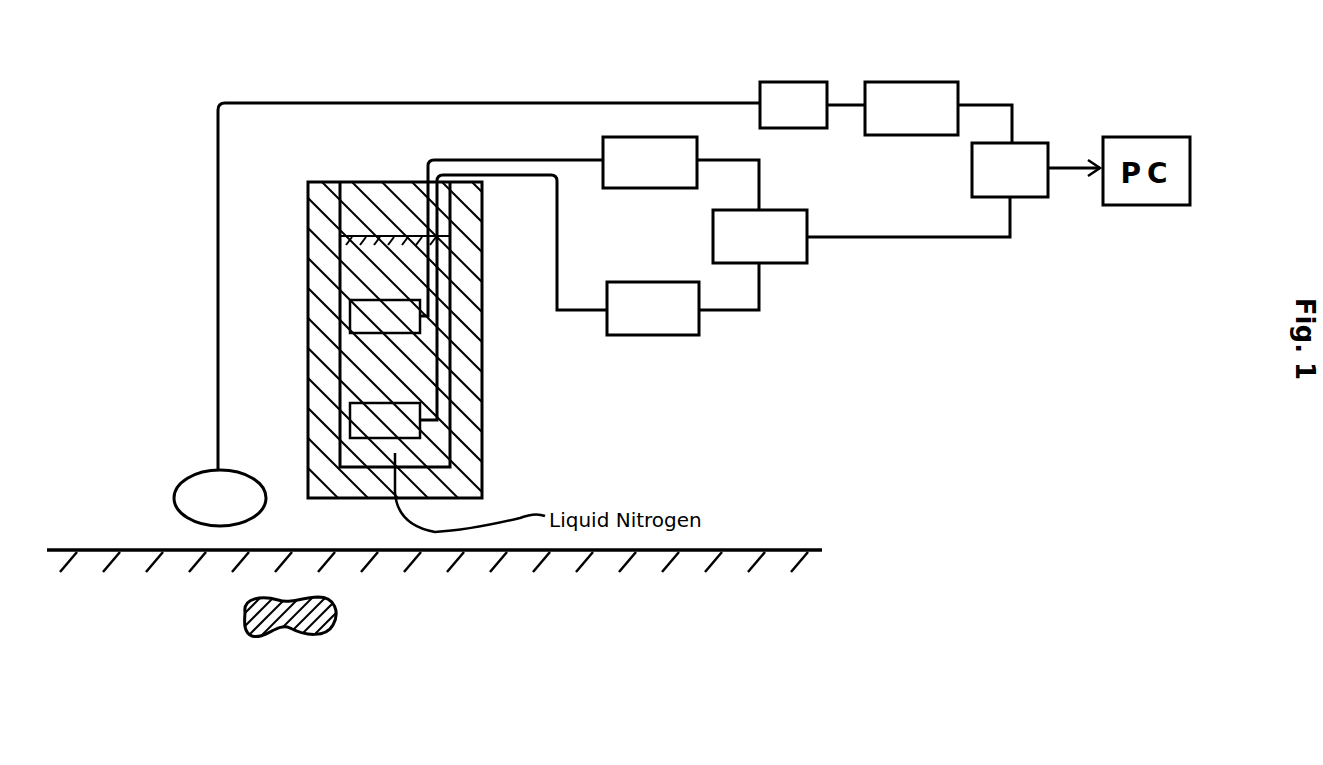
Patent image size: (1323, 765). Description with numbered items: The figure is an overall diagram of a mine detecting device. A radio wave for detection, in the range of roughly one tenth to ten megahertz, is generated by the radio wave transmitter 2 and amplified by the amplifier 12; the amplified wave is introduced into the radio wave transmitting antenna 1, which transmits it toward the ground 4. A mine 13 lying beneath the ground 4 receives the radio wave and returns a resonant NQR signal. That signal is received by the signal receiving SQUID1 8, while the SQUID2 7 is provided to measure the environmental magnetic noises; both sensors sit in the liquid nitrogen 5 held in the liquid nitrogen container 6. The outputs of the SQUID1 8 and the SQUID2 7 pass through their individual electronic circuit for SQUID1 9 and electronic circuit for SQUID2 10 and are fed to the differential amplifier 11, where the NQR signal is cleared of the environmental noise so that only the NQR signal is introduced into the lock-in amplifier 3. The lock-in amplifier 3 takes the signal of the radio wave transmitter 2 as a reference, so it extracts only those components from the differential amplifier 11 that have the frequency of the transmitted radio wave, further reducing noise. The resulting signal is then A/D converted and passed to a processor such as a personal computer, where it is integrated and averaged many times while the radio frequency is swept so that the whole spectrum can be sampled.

The radio wave transmitting antenna 1 is at (176, 492).
The radio wave transmitter 2 is at (903, 82).
The lock-in amplifier 3 is at (1028, 142).
The ground 4 is at (734, 554).
The liquid nitrogen 5 is at (378, 295).
The liquid nitrogen container 6 is at (320, 299).
The SQUID2 7 is at (405, 333).
The SQUID1 8 is at (410, 438).
The electronic circuit for SQUID1 9 is at (654, 188).
The electronic circuit for SQUID2 10 is at (655, 335).
The differential amplifier 11 is at (790, 263).
The amplifier 12 is at (797, 82).
The mine 13 is at (338, 612).